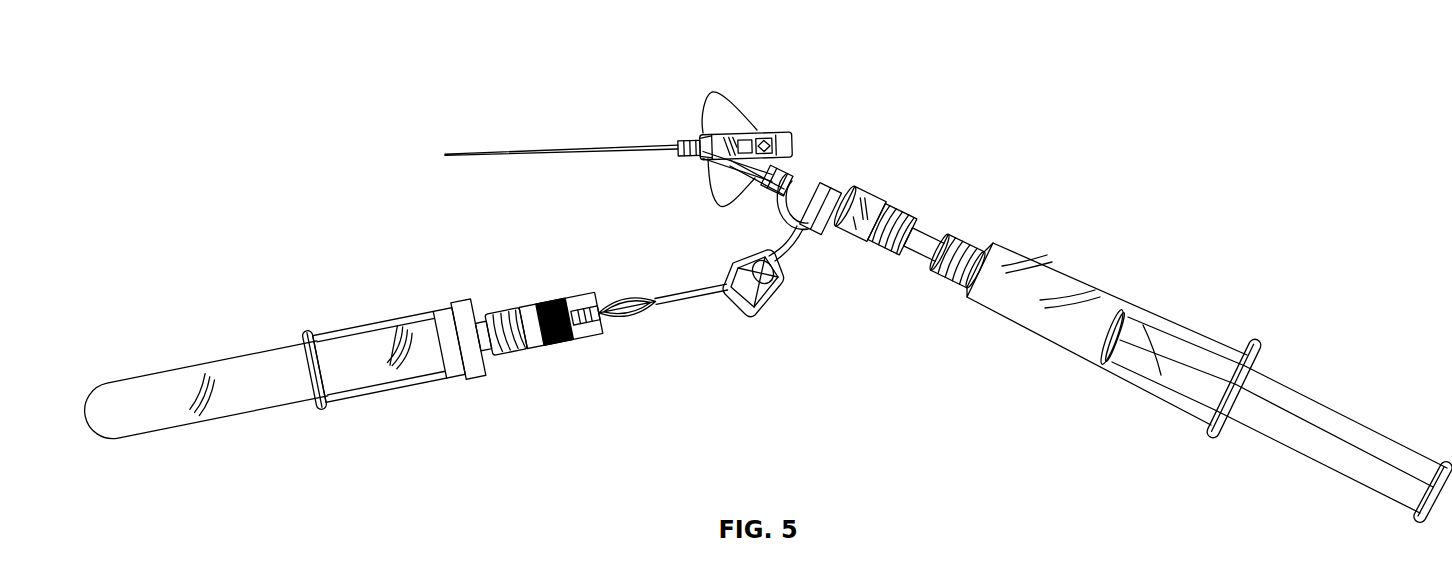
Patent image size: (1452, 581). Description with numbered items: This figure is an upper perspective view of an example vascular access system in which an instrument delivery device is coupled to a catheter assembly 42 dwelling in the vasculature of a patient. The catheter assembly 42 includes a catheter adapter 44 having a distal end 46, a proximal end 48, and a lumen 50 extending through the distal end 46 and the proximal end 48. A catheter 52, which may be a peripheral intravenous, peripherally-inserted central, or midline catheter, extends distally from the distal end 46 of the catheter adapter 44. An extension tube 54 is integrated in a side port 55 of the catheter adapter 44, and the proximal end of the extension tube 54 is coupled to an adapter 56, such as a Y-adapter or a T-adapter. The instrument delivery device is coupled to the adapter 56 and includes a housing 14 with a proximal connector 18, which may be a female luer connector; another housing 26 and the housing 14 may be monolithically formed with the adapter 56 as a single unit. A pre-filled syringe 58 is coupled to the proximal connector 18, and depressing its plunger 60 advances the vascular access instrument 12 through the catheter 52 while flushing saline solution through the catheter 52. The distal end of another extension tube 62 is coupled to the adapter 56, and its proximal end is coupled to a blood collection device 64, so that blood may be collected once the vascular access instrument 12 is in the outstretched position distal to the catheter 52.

The vascular access instrument 12 is at (561, 153).
The housing 14 is at (928, 235).
The proximal connector 18 is at (967, 243).
The other housing 26 is at (877, 192).
The catheter assembly 42 is at (747, 122).
The catheter adapter 44 is at (723, 135).
The distal end 46 is at (682, 140).
The proximal end 48 is at (786, 136).
The lumen 50 is at (803, 146).
The catheter 52 is at (630, 146).
The extension tube 54 is at (775, 184).
The side port 55 is at (756, 191).
The adapter 56 is at (826, 218).
The pre-filled syringe 58 is at (1103, 292).
The plunger 60 is at (1337, 430).
The other extension tube 62 is at (690, 298).
The blood collection device 64 is at (520, 372).